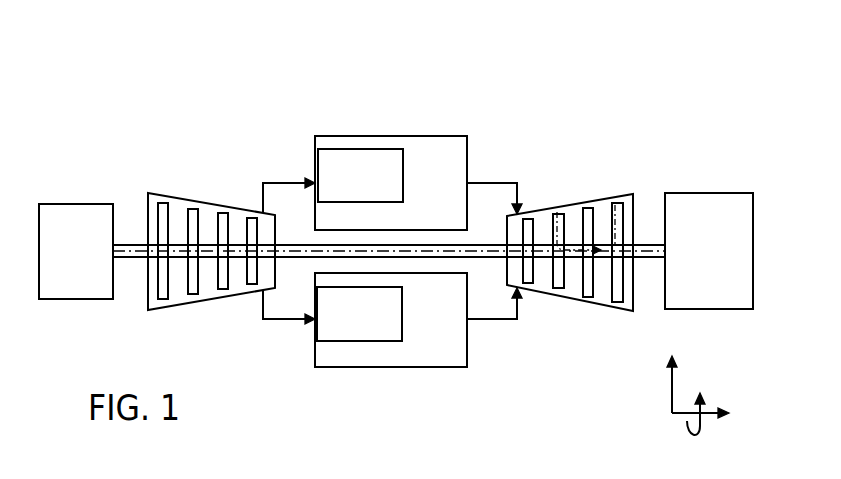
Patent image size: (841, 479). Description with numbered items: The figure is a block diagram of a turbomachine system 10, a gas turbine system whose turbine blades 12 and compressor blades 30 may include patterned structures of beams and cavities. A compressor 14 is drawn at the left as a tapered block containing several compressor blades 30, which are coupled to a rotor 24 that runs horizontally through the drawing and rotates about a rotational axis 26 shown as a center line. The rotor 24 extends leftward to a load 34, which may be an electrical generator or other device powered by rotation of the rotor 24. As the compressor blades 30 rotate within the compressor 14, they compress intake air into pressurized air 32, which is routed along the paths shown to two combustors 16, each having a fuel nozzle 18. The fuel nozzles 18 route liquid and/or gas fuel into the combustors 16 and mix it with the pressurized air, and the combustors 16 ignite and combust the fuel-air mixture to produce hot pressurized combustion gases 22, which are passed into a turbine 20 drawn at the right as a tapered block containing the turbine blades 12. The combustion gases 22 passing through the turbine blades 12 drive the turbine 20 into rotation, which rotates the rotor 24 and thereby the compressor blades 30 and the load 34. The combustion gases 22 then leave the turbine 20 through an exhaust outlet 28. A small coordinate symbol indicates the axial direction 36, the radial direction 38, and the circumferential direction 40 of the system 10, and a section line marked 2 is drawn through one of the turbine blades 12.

The turbomachine system 10 is at (112, 66).
The turbine blades 12 is at (528, 284).
The compressor 14 is at (195, 228).
The combustors 16 is at (409, 246).
The fuel nozzles 18 is at (403, 167).
The turbine 20 is at (585, 257).
The combustion gases 22 is at (519, 200).
The rotor 24 is at (209, 261).
The rotational axis 26 is at (178, 257).
The exhaust outlet 28 is at (706, 193).
The compressor blades 30 is at (252, 218).
The pressurized air 32 is at (262, 186).
The load 34 is at (75, 205).
The axial direction 36 is at (705, 413).
The radial direction 38 is at (672, 390).
The circumferential direction 40 is at (695, 432).
The section line 2- 2 is at (560, 203).